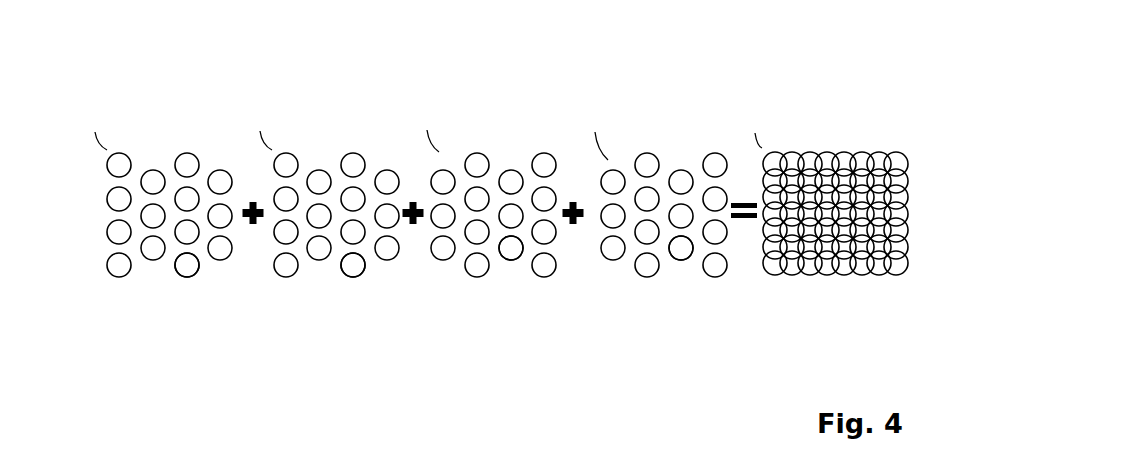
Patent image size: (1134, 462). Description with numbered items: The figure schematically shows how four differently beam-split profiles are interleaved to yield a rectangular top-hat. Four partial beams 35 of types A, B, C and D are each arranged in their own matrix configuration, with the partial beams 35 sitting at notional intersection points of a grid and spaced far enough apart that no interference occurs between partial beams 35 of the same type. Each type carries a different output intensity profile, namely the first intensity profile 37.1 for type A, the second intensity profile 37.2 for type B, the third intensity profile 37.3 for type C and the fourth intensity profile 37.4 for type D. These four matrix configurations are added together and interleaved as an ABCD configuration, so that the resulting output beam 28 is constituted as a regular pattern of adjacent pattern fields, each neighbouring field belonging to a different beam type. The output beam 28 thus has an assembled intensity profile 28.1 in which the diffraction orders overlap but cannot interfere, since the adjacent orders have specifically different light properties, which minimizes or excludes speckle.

The first partial beam intensity profile 37.1 is at (152, 261).
The second partial beam intensity profile 37.2 is at (320, 261).
The third partial beam intensity profile 37.3 is at (478, 277).
The fourth partial beam intensity profile 37.4 is at (648, 277).
The partial beam 35 is at (201, 263).
The output beam 28 is at (826, 221).
The assembled intensity profile 28.1 is at (848, 276).